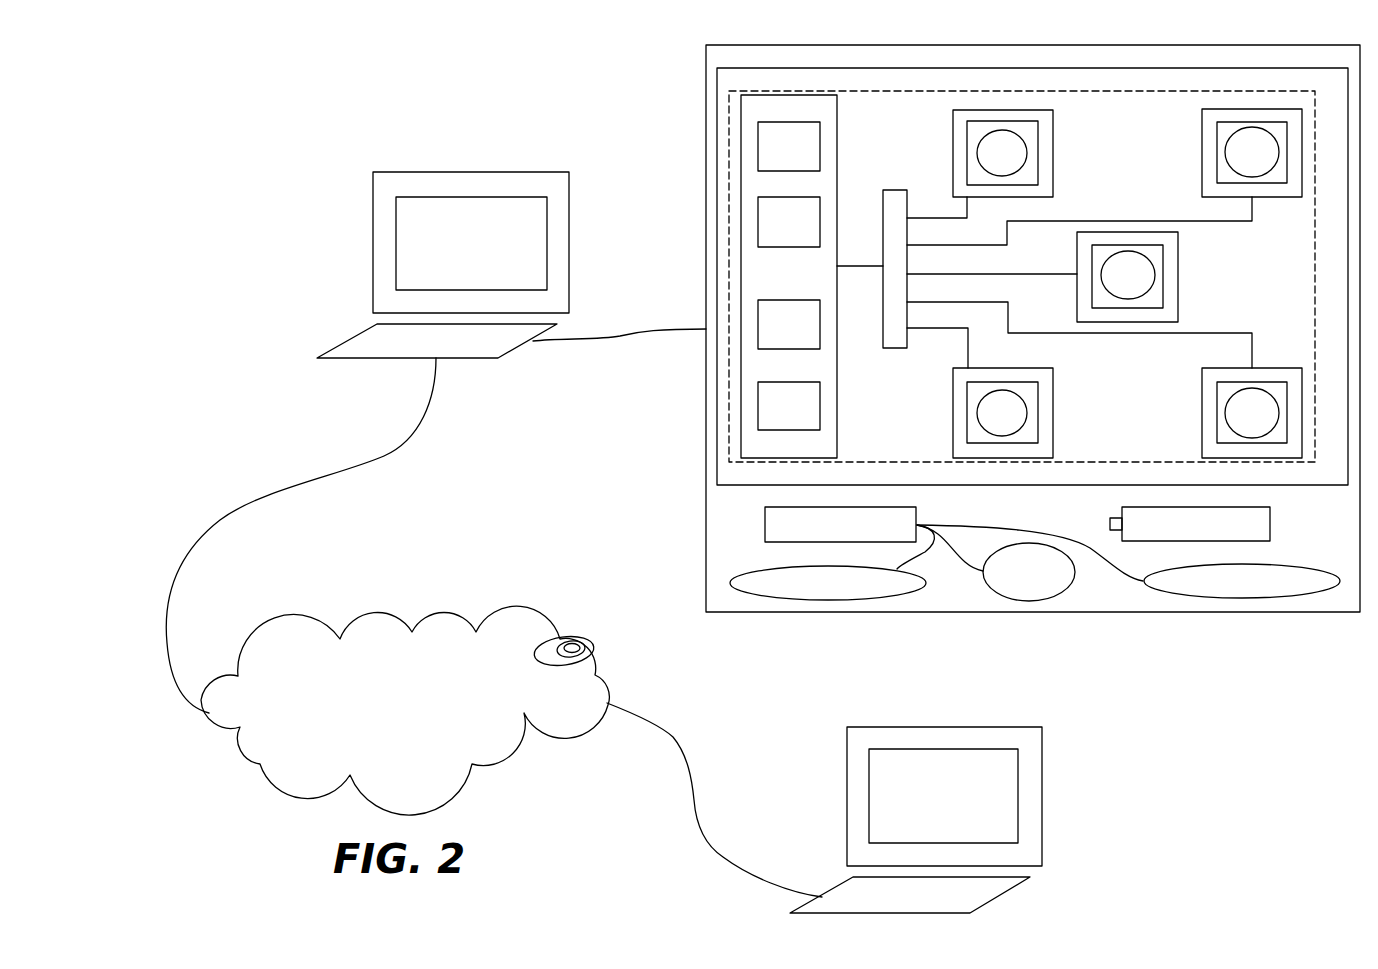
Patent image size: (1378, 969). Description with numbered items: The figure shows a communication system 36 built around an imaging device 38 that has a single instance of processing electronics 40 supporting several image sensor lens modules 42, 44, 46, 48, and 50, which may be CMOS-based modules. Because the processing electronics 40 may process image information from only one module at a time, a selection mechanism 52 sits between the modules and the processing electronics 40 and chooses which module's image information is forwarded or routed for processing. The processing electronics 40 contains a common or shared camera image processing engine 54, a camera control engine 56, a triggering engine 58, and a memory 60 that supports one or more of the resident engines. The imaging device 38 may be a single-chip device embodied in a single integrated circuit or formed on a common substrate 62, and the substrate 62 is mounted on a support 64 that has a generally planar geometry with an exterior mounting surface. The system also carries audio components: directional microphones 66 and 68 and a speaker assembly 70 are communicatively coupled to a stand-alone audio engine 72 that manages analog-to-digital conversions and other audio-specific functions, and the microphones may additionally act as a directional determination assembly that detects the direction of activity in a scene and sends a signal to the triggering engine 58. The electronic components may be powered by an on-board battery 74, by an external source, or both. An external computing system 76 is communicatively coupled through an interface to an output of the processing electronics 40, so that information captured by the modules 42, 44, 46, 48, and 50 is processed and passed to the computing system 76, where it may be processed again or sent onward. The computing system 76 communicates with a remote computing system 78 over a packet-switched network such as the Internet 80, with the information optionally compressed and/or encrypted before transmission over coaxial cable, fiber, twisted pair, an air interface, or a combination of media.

The communication system 36 is at (362, 148).
The imaging device 38 is at (719, 153).
The processing electronics 40 is at (786, 297).
The image sensor lens module 42 is at (989, 149).
The image sensor lens module 44 is at (1239, 150).
The image sensor lens module 46 is at (1114, 274).
The image sensor lens module 48 is at (990, 410).
The image sensor lens module 50 is at (1239, 413).
The selection mechanism 52 is at (887, 178).
The camera image processing engine 54 is at (775, 162).
The camera control engine 56 is at (775, 237).
The triggering engine 58 is at (775, 340).
The memory 60 is at (775, 421).
The common substrate 62 is at (706, 247).
The support 64 is at (698, 501).
The directional microphone 66 is at (814, 598).
The directional microphone 68 is at (1228, 596).
The speaker assembly 70 is at (1015, 587).
The audio engine 72 is at (814, 540).
The battery 74 is at (1182, 539).
The external computing system 76 is at (454, 268).
The remote computing system 78 is at (926, 808).
The Internet 80 is at (387, 718).